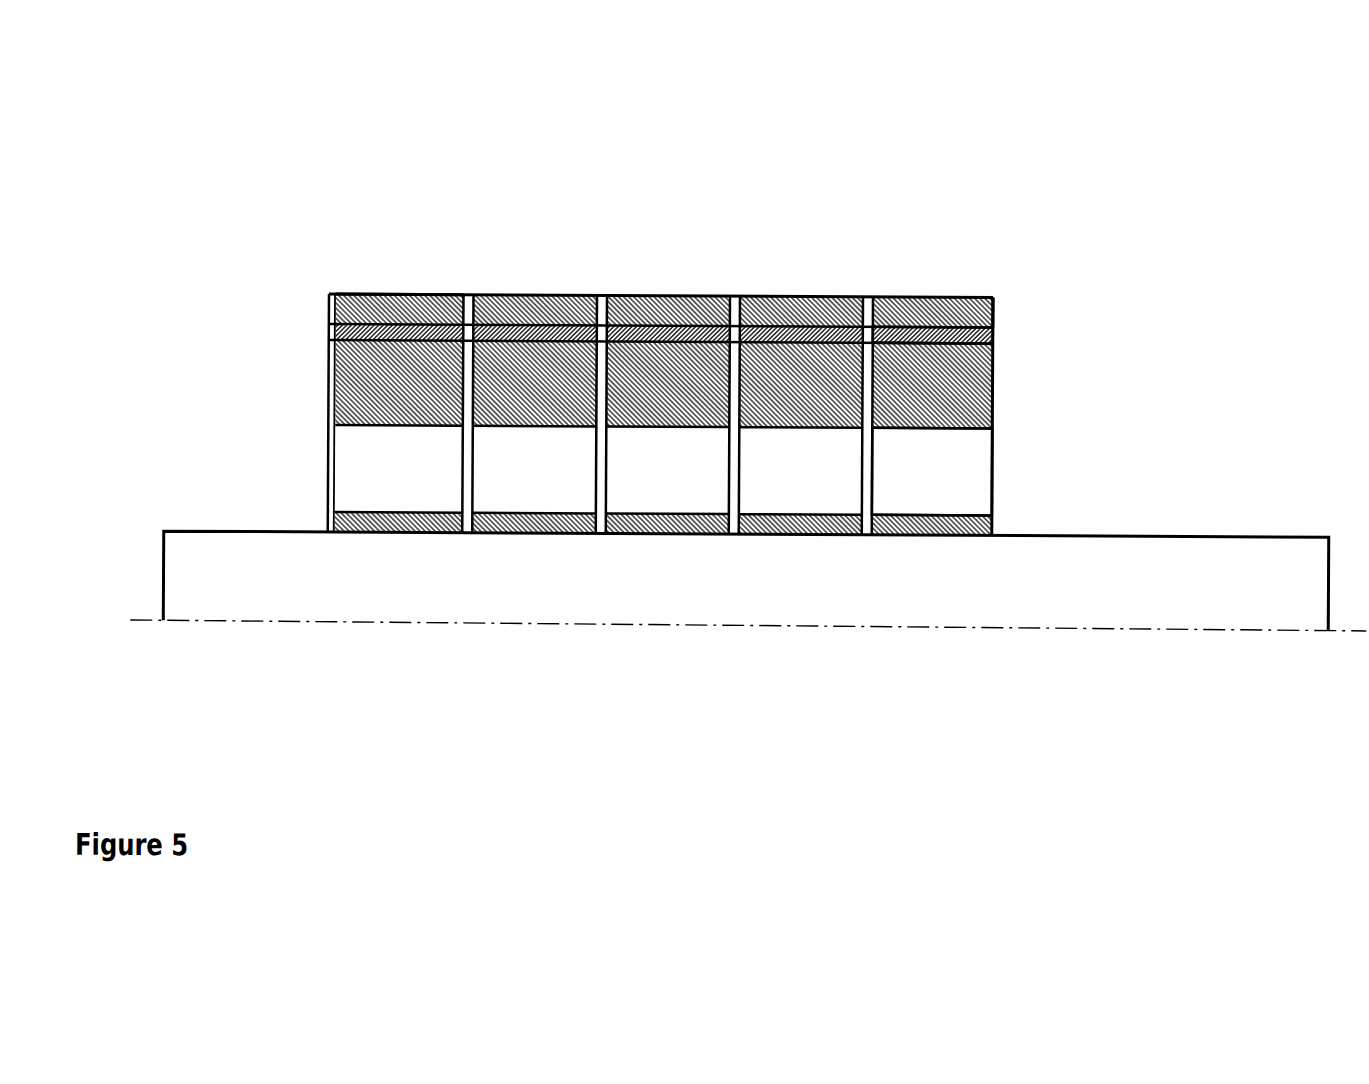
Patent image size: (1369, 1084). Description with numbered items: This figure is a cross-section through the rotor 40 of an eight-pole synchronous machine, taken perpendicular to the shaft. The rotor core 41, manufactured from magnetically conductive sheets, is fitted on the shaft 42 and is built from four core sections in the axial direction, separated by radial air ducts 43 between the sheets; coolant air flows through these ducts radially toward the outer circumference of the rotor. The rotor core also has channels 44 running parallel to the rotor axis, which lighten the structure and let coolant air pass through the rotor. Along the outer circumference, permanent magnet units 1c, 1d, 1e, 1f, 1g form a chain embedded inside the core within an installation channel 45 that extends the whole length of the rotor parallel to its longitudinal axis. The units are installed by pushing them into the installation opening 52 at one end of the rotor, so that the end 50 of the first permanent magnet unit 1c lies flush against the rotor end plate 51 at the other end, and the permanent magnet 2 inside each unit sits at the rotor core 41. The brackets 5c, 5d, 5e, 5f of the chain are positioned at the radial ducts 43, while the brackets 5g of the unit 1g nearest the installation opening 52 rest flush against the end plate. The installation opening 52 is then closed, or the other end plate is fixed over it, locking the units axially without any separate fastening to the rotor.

The permanent magnet 2 is at (371, 298).
The permanent magnet unit 1c is at (412, 318).
The permanent magnet unit 1d is at (517, 316).
The permanent magnet unit 1e is at (650, 318).
The permanent magnet unit 1f is at (790, 318).
The permanent magnet unit 1g is at (930, 317).
The bracket 5c is at (469, 331).
The bracket 5d is at (601, 330).
The bracket 5e is at (736, 330).
The bracket 5f is at (868, 329).
The bracket 5g is at (993, 330).
The rotor 40 is at (1110, 396).
The rotor core 41 is at (358, 397).
The shaft 42 is at (276, 576).
The radial air duct 43 is at (863, 517).
The channel 44 is at (951, 453).
The installation channel 45 is at (995, 296).
The end of the permanent magnet unit 50 is at (335, 334).
The rotor end plate 51 is at (331, 467).
The installation opening 52 is at (993, 334).